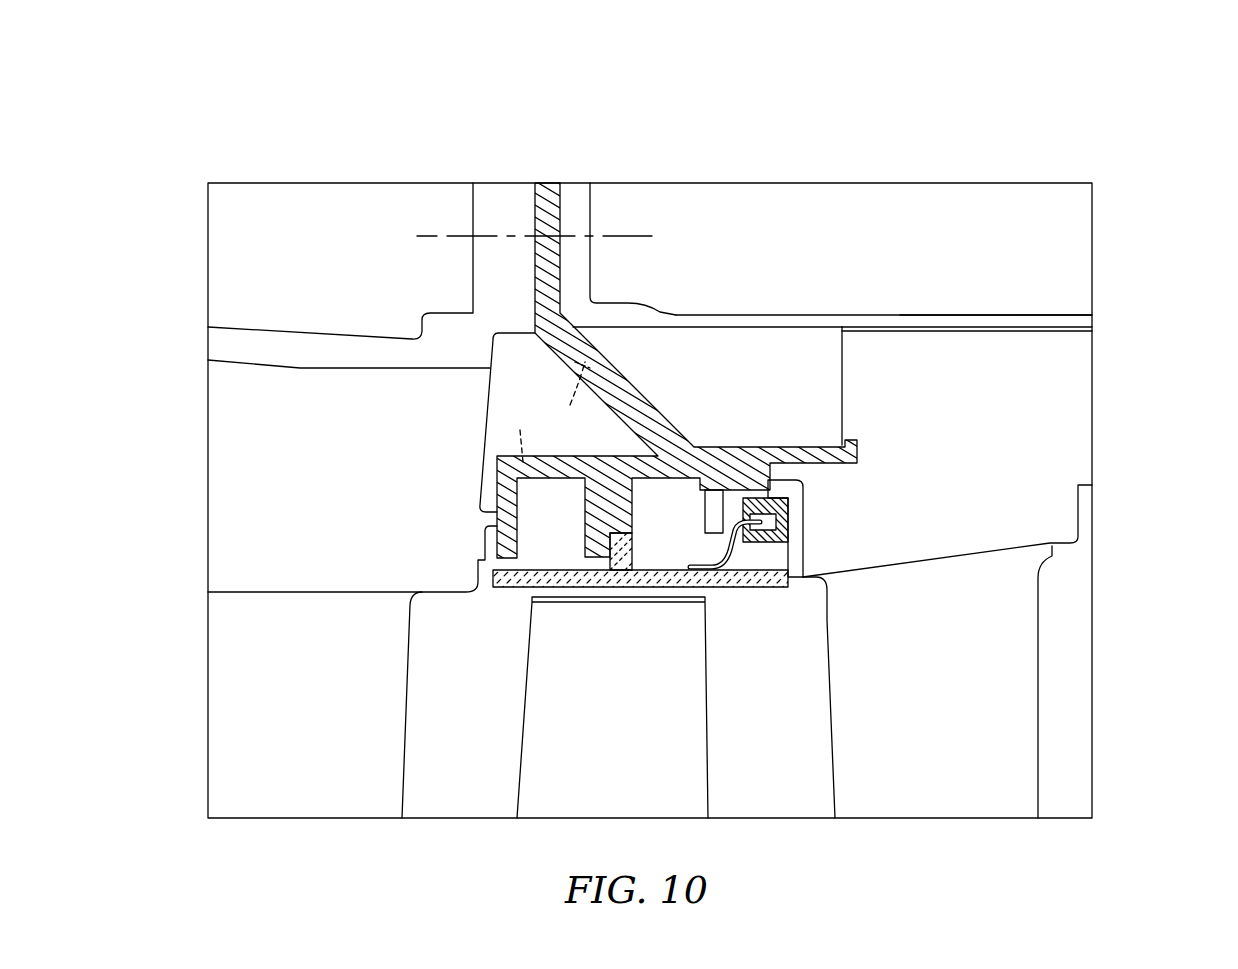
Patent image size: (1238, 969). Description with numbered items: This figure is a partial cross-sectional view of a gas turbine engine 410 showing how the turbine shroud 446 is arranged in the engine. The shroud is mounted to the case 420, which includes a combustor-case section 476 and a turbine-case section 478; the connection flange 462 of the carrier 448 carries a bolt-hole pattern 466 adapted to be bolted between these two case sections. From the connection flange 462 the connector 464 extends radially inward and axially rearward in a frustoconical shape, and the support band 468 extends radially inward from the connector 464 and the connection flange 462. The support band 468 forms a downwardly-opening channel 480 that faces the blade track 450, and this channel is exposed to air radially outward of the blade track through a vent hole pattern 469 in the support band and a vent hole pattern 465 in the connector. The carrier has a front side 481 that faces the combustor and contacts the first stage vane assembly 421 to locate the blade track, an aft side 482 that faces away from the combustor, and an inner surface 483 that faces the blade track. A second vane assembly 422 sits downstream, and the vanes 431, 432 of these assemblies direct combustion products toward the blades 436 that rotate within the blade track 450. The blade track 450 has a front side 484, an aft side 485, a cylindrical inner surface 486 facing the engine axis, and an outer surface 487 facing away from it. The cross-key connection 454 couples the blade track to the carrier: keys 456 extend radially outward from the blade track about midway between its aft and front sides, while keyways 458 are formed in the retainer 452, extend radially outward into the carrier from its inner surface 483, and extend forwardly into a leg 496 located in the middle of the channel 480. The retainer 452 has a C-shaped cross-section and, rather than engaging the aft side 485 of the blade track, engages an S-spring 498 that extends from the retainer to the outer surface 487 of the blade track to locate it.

The gas turbine engine 410 is at (250, 157).
The case 420 is at (925, 312).
The first stage vane assembly 421 is at (283, 400).
The turbine vane assembly 422 is at (970, 352).
The vanes 431 is at (380, 762).
The vanes 432 is at (992, 770).
The blades 436 is at (555, 795).
The turbine shroud 446 is at (715, 355).
The carrier 448 is at (600, 345).
The blade track 450 is at (495, 577).
The retainer 452 is at (800, 508).
The cross-key connection 454 is at (563, 528).
The keys 456 is at (622, 560).
The keyways 458 is at (612, 512).
The connection flange 462 is at (565, 210).
The connector 464 is at (655, 410).
The vent hole pattern 465 is at (572, 398).
The bolt-hole pattern 466 is at (548, 212).
The support band 468 is at (695, 442).
The vent hole pattern 469 is at (522, 433).
The combustor-case section 476 is at (245, 350).
The turbine-case section 478 is at (1037, 313).
The channel 480 is at (555, 542).
The front side 481 is at (492, 540).
The aft side 482 is at (790, 538).
The inner surface 483 is at (590, 555).
The front side 484 is at (483, 600).
The aft side 485 is at (798, 590).
The inner surface 486 is at (750, 590).
The outer surface 487 is at (650, 572).
The leg 496 is at (640, 493).
The S-spring 498 is at (742, 555).